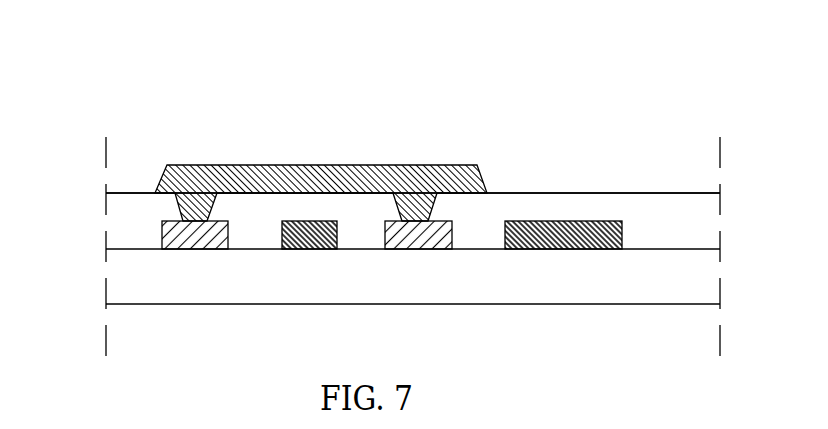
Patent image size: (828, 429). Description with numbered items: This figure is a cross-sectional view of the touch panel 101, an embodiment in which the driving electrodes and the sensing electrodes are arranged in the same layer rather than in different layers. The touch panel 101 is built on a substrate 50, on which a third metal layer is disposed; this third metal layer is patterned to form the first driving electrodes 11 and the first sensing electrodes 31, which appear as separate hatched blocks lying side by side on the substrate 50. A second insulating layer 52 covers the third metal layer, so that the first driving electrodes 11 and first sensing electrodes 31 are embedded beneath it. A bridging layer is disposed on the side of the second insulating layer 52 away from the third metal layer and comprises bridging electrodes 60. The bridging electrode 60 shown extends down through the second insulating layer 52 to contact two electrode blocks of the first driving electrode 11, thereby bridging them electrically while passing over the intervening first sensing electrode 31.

The touch panel 101 is at (219, 84).
The substrate 50 is at (157, 293).
The second insulating layer 52 is at (147, 227).
The bridging electrode 60 is at (353, 177).
The first driving electrode 11 is at (190, 232).
The first sensing electrode 31 is at (302, 234).